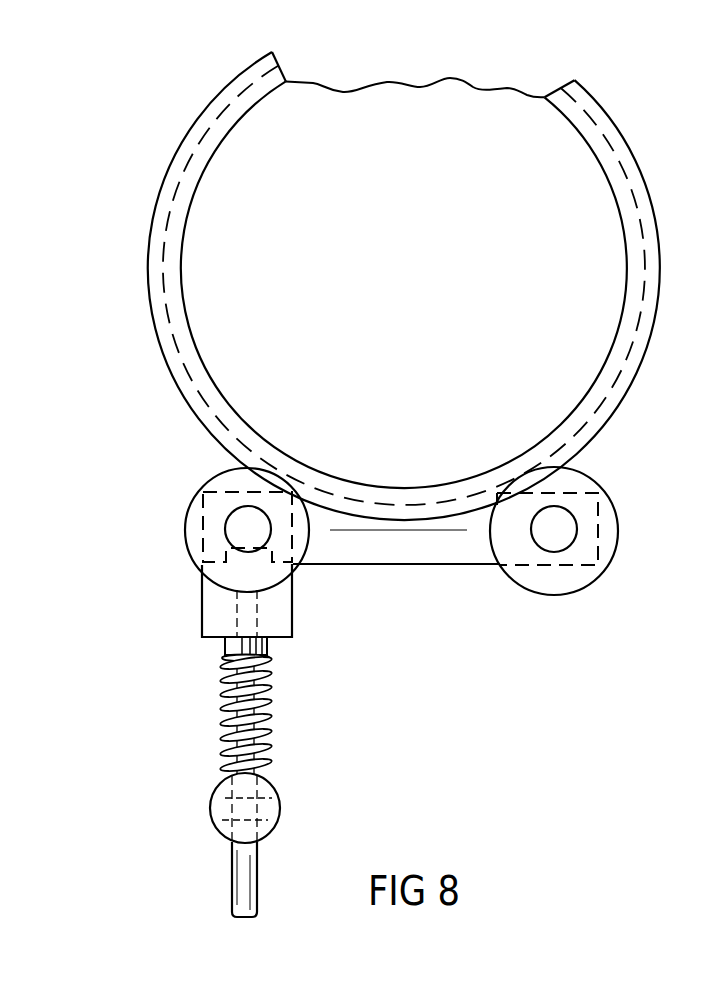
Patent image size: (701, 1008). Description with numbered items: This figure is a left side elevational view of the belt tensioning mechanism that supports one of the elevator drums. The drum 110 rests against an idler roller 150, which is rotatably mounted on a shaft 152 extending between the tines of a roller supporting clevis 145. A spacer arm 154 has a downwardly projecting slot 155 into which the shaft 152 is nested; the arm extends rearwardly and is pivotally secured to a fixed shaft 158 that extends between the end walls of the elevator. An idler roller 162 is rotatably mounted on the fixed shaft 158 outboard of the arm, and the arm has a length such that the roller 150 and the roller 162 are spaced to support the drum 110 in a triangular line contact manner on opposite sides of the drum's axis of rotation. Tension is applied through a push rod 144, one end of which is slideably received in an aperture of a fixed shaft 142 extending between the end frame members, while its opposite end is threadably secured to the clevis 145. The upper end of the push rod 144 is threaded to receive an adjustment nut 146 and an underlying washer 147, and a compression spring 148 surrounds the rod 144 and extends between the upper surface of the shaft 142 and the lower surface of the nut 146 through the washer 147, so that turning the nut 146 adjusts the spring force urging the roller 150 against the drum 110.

The drum 110 is at (232, 370).
The fixed shaft 142 is at (279, 811).
The push rod 144 is at (250, 878).
The roller supporting clevis 145 is at (293, 592).
The adjustment nut 146 is at (270, 645).
The washer 147 is at (228, 658).
The compression spring 148 is at (272, 708).
The idler roller 150 is at (186, 536).
The shaft 152 is at (242, 518).
The spacer arm 154 is at (404, 556).
The downwardly projecting slot 155 is at (200, 569).
The fixed shaft 158 is at (555, 534).
The idler roller 162 is at (516, 567).